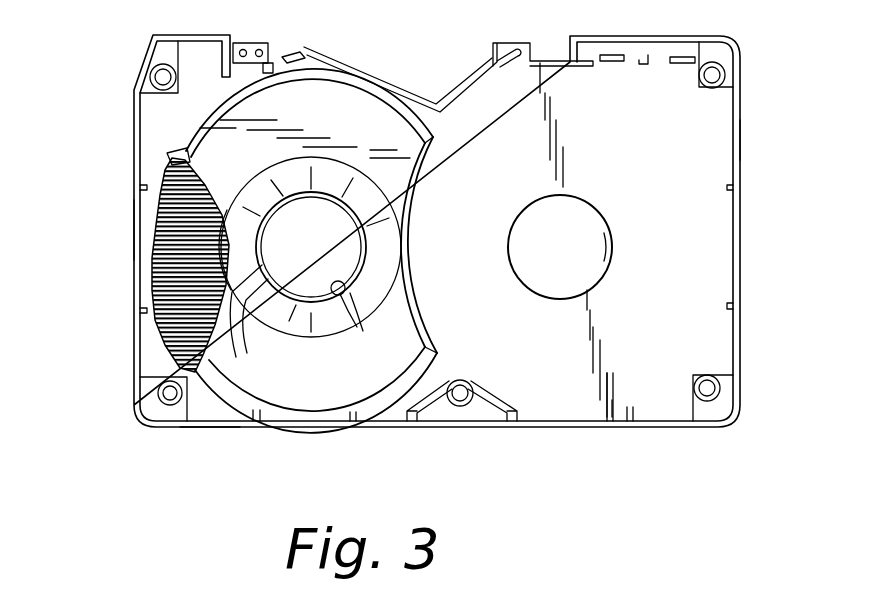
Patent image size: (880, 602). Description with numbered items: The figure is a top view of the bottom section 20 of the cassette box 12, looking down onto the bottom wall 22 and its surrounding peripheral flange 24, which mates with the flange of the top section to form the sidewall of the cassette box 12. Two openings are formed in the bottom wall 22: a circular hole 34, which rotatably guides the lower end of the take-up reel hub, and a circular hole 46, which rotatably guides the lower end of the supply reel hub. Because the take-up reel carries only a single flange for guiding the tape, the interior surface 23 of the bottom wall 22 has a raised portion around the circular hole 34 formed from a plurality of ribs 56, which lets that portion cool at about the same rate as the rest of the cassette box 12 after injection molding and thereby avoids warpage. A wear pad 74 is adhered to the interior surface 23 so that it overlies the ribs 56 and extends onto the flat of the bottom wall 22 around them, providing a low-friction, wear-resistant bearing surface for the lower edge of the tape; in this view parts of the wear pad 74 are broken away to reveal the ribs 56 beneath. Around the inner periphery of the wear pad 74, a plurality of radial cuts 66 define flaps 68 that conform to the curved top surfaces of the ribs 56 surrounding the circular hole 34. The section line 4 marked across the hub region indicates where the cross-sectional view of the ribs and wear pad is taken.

The cassette box 12 is at (486, 231).
The bottom section 20 is at (745, 273).
The bottom wall 22 is at (655, 138).
The interior surface 23 is at (717, 143).
The peripheral flange 24 is at (132, 231).
The circular hole 34 is at (355, 330).
The circular hole 46 is at (598, 250).
The ribs 56 is at (180, 333).
The radial cuts 66 is at (248, 300).
The flaps 68 is at (327, 180).
The wear pad 74 is at (207, 151).
The section line 4- 4 is at (270, 247).